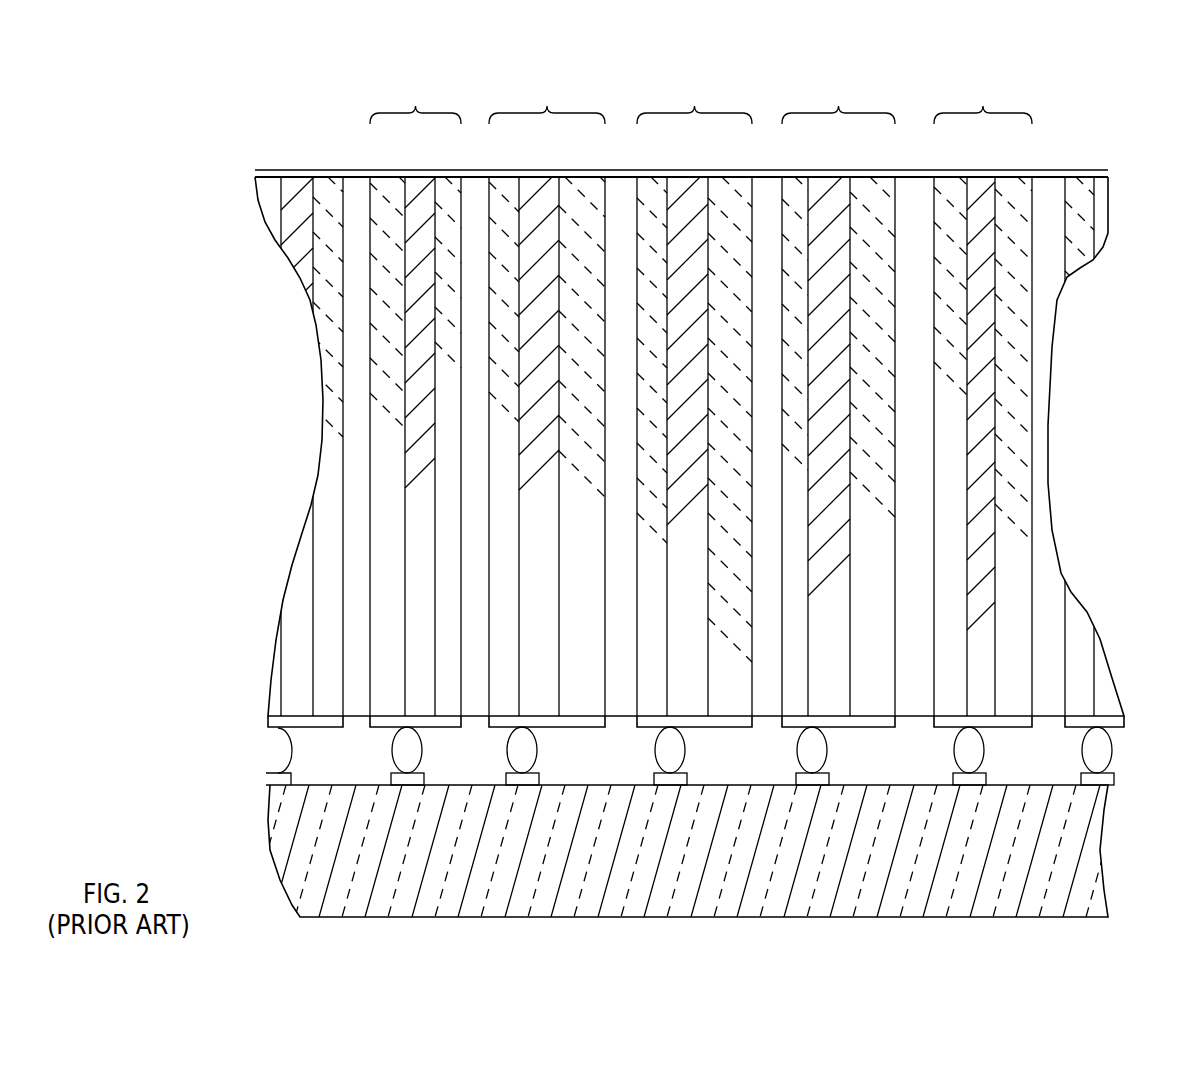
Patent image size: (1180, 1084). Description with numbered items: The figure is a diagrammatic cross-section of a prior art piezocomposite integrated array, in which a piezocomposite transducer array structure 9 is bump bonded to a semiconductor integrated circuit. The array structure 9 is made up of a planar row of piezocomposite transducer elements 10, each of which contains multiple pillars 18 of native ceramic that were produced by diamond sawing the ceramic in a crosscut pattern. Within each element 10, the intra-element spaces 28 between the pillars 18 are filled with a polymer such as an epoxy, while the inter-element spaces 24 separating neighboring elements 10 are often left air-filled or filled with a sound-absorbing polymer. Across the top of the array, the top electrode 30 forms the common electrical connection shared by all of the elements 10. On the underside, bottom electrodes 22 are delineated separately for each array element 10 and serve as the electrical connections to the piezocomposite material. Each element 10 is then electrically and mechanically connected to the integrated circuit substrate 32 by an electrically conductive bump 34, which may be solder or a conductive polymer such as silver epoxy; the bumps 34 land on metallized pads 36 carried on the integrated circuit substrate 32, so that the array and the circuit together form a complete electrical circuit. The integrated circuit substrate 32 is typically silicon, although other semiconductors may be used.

The piezocomposite transducer array structure 9 is at (275, 431).
The piezocomposite transducer element 10 is at (701, 100).
The pillar 18 is at (365, 178).
The bottom electrode 22 is at (385, 729).
The inter-element space 24 is at (355, 258).
The intra-element space 28 is at (412, 190).
The top electrode 30 is at (1093, 170).
The integrated circuit substrate 32 is at (270, 832).
The electrically conductive bump 34 is at (393, 739).
The metallized pad 36 is at (390, 783).